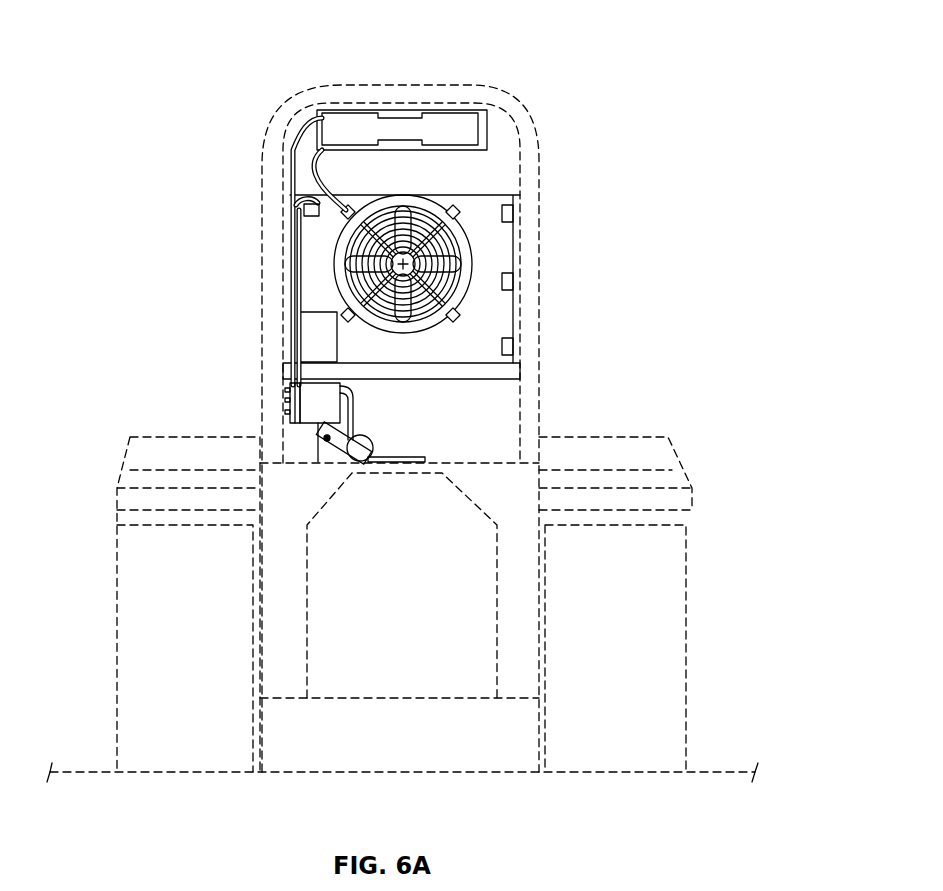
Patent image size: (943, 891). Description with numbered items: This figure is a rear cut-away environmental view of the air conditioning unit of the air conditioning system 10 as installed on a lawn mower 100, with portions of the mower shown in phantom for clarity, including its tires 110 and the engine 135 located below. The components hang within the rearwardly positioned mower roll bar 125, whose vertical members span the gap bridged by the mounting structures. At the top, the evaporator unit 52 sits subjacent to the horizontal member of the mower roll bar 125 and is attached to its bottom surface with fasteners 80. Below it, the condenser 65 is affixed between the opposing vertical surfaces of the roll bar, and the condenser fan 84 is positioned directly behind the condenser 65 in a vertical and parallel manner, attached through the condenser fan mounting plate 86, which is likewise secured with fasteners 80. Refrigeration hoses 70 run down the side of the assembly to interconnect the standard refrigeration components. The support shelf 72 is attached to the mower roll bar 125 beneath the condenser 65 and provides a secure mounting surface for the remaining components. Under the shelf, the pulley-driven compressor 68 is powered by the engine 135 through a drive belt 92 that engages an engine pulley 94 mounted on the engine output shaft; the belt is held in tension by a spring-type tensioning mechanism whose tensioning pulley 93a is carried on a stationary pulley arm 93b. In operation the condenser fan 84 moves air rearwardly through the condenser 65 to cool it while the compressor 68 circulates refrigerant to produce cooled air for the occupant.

The air conditioning system for an open motorized vehicle 10 is at (770, 98).
The evaporator unit 52 is at (456, 113).
The condenser 65 is at (298, 343).
The pulley-driven compressor 68 is at (297, 392).
The refrigeration hoses 70 is at (290, 150).
The support shelf 72 is at (513, 372).
The fasteners 80 is at (510, 213).
The condenser fan 84 is at (455, 265).
The condenser fan mounting plate 86 is at (517, 196).
The drive belt 92 is at (355, 415).
The tensioning pulleys 93a is at (370, 441).
The stationary pulley arm 93b is at (338, 447).
The engine pulley 94 is at (425, 458).
The lawn mower 100 is at (682, 468).
The tires 110 is at (117, 592).
The mower roll bar 125 is at (508, 98).
The engine 135 is at (497, 610).